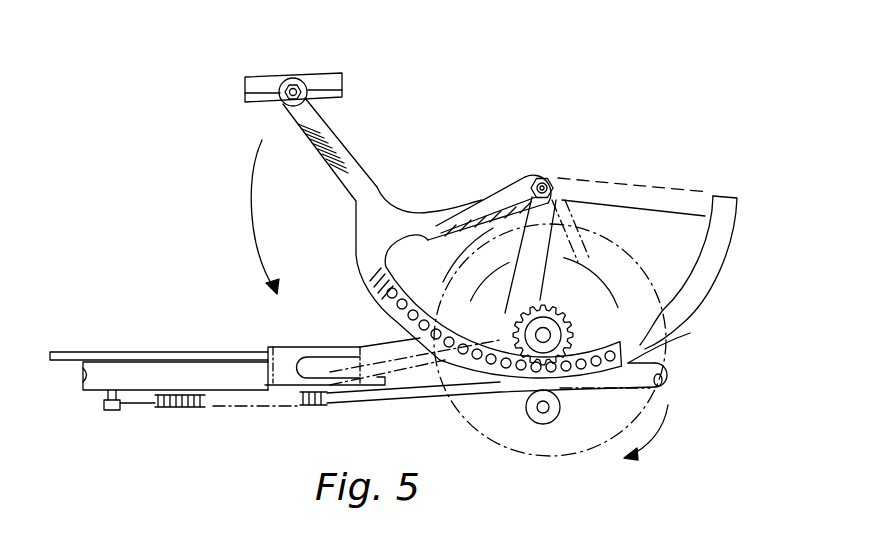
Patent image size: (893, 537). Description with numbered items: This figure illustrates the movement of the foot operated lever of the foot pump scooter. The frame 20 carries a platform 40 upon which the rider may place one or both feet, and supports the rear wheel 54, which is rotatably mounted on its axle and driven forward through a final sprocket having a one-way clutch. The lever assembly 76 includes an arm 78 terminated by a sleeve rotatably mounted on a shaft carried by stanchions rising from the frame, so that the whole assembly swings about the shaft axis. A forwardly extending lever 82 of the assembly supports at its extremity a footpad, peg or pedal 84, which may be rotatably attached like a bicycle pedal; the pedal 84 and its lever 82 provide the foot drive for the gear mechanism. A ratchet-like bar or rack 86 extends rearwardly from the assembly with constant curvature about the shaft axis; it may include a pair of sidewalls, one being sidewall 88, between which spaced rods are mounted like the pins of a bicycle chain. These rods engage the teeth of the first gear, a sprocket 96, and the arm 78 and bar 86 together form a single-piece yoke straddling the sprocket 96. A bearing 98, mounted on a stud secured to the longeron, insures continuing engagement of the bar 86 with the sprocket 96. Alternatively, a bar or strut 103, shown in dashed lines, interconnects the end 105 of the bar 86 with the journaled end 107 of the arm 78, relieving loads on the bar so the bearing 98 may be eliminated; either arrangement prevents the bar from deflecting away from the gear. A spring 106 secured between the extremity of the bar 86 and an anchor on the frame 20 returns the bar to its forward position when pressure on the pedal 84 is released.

The frame 20 is at (143, 372).
The platform 40 is at (88, 352).
The wheel 54 is at (665, 363).
The lever assembly 76 is at (373, 200).
The arm 78 is at (490, 188).
The lever 82 is at (343, 128).
The footpad, peg or pedal 84 is at (340, 78).
The ratchet-like bar or rack 86 is at (377, 298).
The sidewall 88 is at (412, 294).
The sprocket 96 is at (572, 322).
The bearing 98 is at (553, 425).
The bar or strut 103 is at (628, 185).
The end of bar 105 is at (732, 195).
The spring 106 is at (305, 404).
The journaled end of arm 107 is at (578, 153).